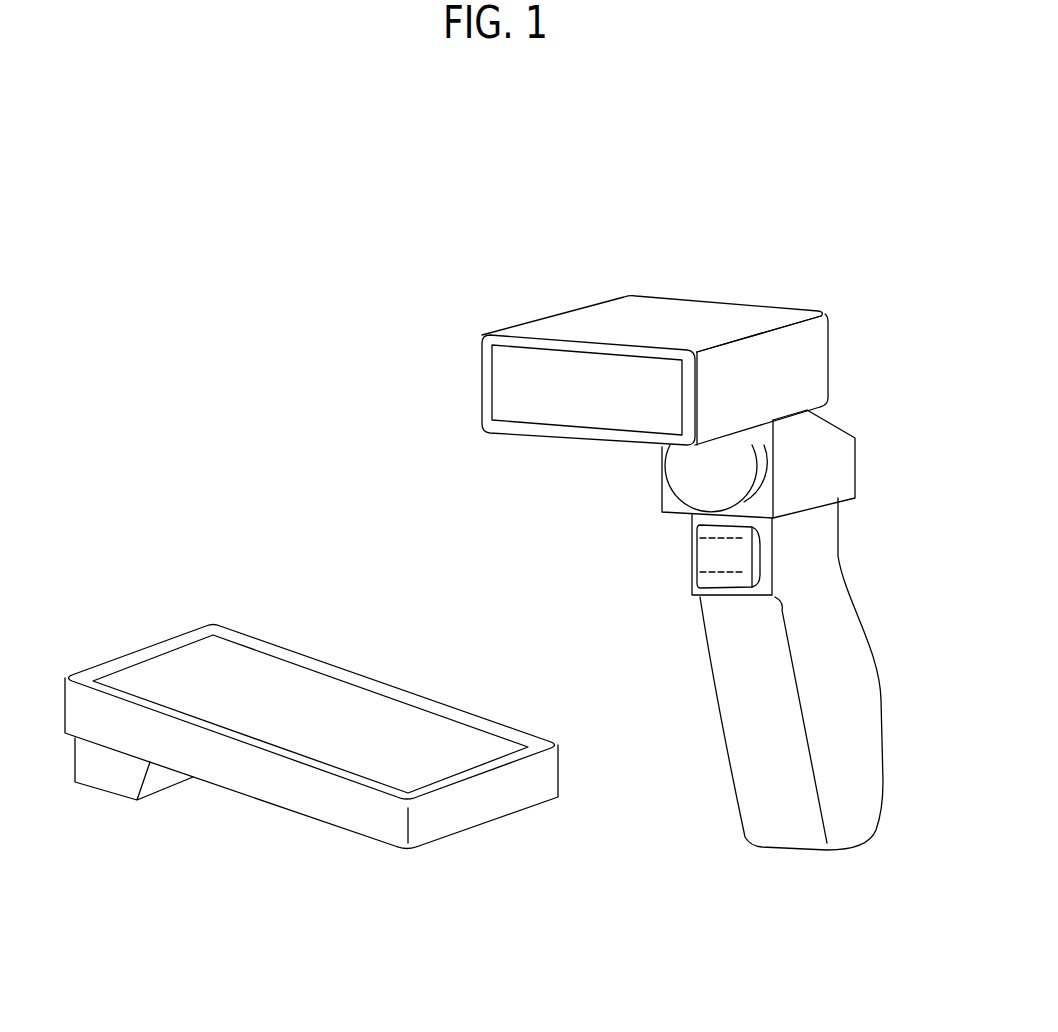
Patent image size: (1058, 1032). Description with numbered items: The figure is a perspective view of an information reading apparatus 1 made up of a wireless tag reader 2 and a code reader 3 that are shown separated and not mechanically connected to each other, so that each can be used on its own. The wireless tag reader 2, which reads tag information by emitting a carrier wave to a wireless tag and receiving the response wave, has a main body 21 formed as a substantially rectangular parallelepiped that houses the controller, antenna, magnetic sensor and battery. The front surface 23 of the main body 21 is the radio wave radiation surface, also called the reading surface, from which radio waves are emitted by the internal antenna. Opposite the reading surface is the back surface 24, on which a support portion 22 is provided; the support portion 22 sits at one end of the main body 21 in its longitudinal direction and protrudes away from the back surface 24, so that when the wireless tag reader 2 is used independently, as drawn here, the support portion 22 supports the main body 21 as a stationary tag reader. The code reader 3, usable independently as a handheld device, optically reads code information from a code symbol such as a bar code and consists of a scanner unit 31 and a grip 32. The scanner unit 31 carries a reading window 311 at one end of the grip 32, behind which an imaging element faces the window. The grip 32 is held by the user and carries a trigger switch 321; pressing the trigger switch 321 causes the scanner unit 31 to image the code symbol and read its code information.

The information reading apparatus 1 is at (461, 192).
The wireless tag reader 2 is at (308, 588).
The main body 21 is at (497, 800).
The support portion 22 is at (98, 780).
The front surface 23 is at (335, 693).
The back surface 24 is at (260, 800).
The code reader 3 is at (766, 262).
The scanner unit 31 is at (613, 328).
The reading window 311 is at (550, 413).
The grip 32 is at (860, 657).
The trigger switch 321 is at (703, 553).